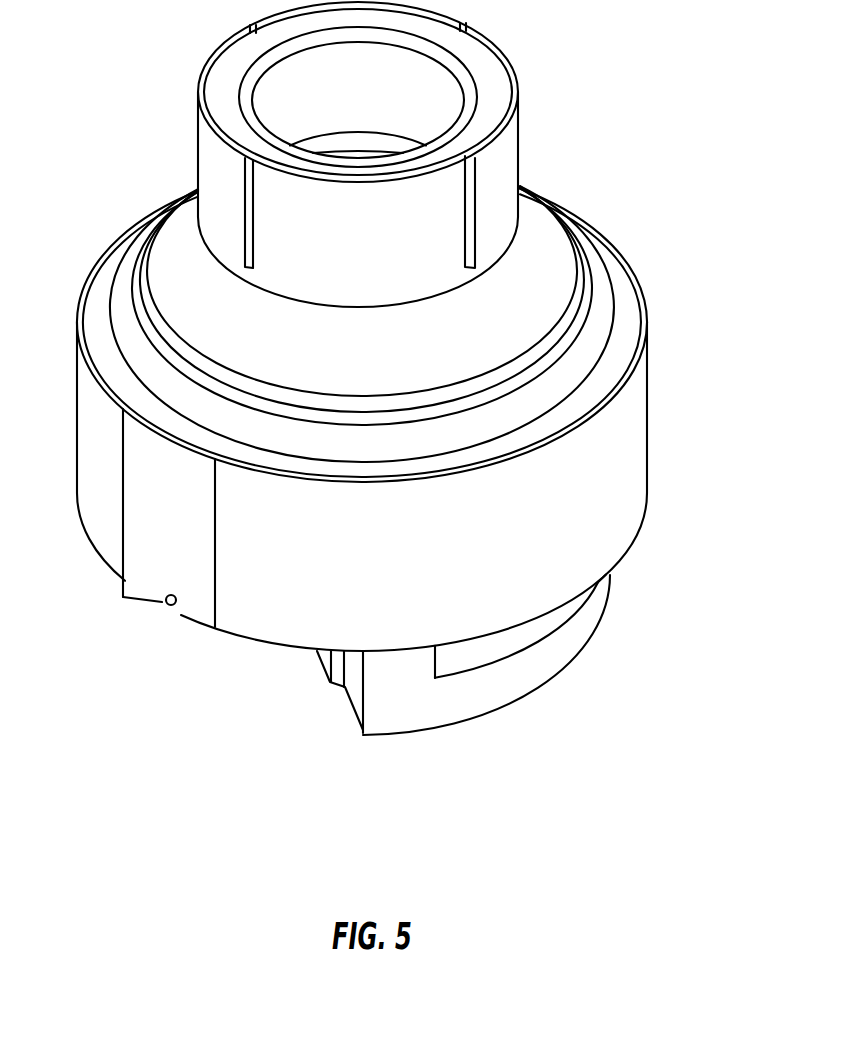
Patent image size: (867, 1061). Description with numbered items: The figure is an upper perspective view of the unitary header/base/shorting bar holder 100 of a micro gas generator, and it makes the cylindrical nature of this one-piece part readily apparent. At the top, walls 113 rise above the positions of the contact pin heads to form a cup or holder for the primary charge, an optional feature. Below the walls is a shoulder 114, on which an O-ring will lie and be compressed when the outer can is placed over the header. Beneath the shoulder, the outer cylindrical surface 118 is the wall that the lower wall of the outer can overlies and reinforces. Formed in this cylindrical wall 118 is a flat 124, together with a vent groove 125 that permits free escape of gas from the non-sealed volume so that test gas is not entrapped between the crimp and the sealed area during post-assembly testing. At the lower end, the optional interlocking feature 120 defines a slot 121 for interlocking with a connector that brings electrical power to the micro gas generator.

The unitary header/base/shorting bar holder 100 is at (382, 368).
The walls 113 is at (502, 157).
The shoulder 114 is at (633, 314).
The outer cylindrical surface 118 is at (633, 424).
The interlocking feature 120 is at (523, 682).
The slot 121 is at (553, 623).
The flat 124 is at (140, 537).
The vent groove 125 is at (170, 605).